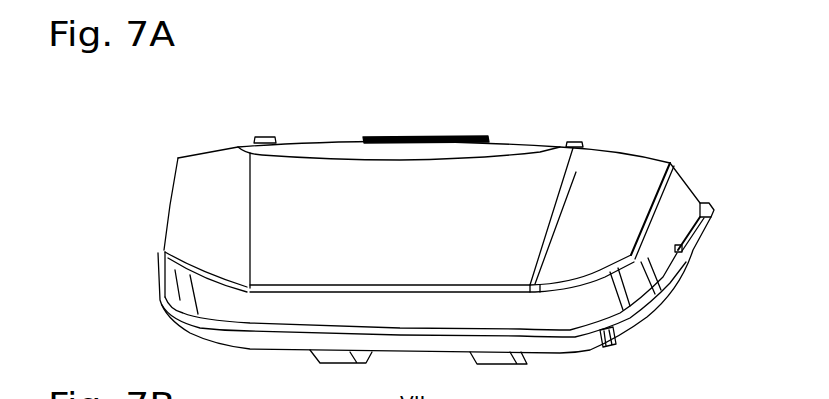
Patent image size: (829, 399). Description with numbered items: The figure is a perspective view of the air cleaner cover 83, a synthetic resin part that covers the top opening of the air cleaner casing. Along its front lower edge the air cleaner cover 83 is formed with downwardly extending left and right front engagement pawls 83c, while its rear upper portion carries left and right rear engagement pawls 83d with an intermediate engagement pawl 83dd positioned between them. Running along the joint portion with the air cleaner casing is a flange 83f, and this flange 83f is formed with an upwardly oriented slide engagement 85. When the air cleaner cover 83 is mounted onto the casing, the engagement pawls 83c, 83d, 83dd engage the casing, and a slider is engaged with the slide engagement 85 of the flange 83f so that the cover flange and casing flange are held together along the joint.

The air cleaner cover 83 is at (643, 170).
The front engagement pawls 83c is at (333, 357).
The rear engagement pawls 83d is at (266, 137).
The intermediate engagement pawl 83dd is at (427, 137).
The flange 83f is at (606, 347).
The slide engagement 85 is at (715, 211).